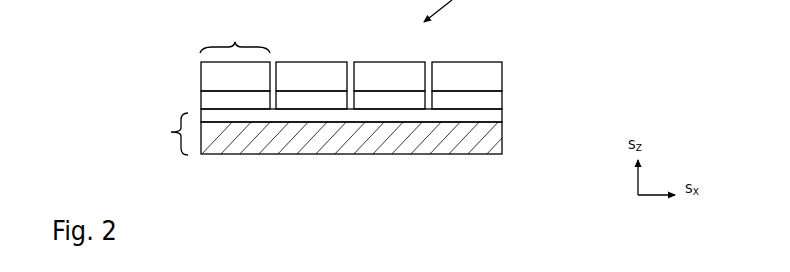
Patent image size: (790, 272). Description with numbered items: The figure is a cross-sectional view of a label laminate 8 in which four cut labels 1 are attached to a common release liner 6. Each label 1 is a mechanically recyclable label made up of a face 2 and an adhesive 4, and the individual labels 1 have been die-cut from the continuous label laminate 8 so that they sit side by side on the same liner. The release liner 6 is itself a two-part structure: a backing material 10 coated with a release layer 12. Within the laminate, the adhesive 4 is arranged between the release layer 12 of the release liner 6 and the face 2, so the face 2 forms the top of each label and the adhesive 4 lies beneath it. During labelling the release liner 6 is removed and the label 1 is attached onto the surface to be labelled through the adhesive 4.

The label 1 is at (235, 41).
The face 2 is at (503, 78).
The adhesive 4 is at (503, 100).
The release liner 6 is at (169, 132).
The label laminate 8 is at (473, 2).
The backing material 10 is at (503, 141).
The release layer 12 is at (503, 112).